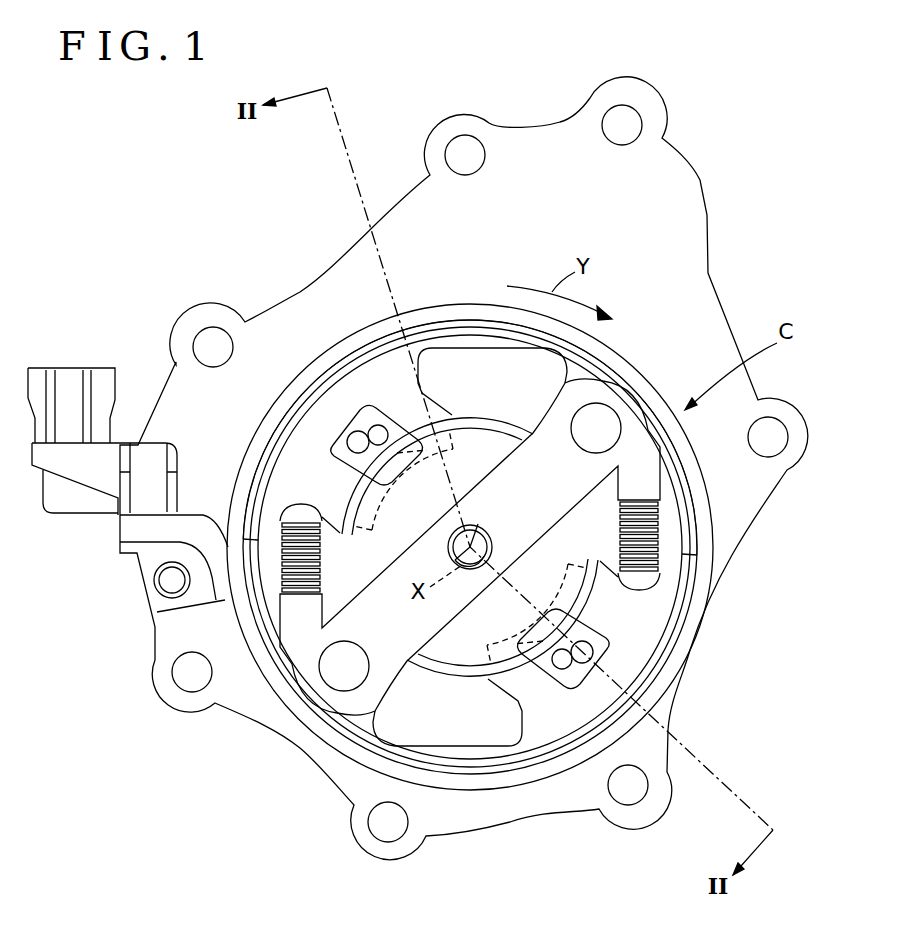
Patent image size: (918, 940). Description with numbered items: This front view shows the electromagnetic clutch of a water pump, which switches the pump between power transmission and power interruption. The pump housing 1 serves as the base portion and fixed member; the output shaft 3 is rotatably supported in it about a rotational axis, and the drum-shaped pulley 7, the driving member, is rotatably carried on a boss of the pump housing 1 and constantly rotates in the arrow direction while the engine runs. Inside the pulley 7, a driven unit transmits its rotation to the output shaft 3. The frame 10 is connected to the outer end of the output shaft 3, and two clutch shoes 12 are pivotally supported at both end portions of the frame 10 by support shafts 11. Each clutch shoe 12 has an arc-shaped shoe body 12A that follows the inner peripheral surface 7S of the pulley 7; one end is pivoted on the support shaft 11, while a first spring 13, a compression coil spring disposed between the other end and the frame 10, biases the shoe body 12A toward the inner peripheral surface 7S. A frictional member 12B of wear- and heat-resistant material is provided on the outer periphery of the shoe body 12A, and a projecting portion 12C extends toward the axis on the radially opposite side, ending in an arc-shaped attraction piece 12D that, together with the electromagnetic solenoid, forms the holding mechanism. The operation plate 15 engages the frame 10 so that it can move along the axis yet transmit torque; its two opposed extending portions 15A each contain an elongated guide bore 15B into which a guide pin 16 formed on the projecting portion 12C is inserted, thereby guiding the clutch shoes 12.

The pump housing 1 is at (668, 170).
The output shaft 3 is at (482, 533).
The pulley 7 is at (703, 510).
The inner peripheral surface 7S is at (684, 486).
The frame 10 is at (422, 627).
The support shaft 11 is at (594, 432).
The clutch shoe 12 is at (313, 398).
The shoe body 12A is at (348, 400).
The frictional member 12B is at (462, 326).
The projecting portion 12C is at (427, 413).
The attraction piece 12D is at (355, 507).
The first spring 13 is at (285, 572).
The operation plate 15 is at (492, 445).
The extending portion 15A is at (362, 470).
The guide bore 15B is at (396, 425).
The guide pin 16 is at (355, 443).